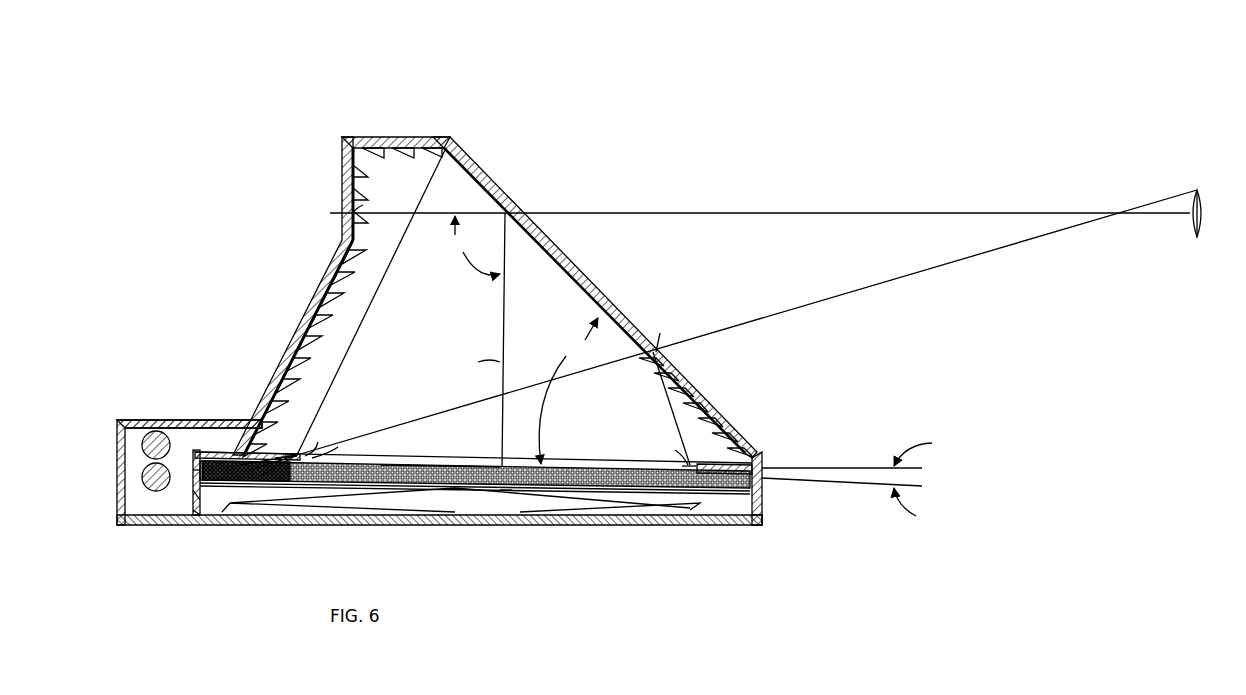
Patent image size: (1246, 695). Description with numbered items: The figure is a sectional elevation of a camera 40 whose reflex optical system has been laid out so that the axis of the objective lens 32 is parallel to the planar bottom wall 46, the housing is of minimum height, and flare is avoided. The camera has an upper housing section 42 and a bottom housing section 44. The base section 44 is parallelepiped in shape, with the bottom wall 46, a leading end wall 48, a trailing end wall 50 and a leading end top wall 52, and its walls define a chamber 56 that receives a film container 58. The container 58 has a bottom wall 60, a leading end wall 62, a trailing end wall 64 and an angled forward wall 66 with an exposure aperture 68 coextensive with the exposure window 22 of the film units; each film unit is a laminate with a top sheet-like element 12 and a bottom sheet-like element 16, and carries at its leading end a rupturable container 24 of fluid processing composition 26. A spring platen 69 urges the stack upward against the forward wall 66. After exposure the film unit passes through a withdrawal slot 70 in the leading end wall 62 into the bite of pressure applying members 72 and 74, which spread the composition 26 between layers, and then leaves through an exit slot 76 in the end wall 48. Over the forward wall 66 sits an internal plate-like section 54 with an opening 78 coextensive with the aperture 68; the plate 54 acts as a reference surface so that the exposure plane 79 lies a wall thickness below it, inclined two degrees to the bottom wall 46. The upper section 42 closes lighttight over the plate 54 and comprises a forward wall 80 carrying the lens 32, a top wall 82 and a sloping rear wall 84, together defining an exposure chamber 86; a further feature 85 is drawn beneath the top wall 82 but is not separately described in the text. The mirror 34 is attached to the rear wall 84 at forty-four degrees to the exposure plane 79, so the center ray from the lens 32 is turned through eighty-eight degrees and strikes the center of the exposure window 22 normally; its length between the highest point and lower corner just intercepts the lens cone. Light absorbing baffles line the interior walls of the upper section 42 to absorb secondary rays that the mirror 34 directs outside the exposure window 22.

The top sheet-like element 12 is at (368, 464).
The bottom sheet-like element 16 is at (440, 466).
The exposure window 22 is at (580, 470).
The rupturable container 24 is at (270, 481).
The fluid processing composition 26 is at (222, 481).
The objective lens 32 is at (330, 213).
The mirror 34 is at (580, 284).
The camera 40 is at (656, 295).
The upper housing section 42 is at (456, 135).
The bottom housing section 44 is at (764, 524).
The bottom wall 46 is at (452, 525).
The leading end wall 48 is at (122, 502).
The trailing end wall 50 is at (764, 480).
The leading end top wall 52 is at (227, 421).
The plate-like section 54 is at (222, 455).
The chamber 56 is at (187, 508).
The film container 58 is at (190, 495).
The bottom wall 60 is at (496, 502).
The leading end wall 62 is at (193, 475).
The trailing end wall 64 is at (722, 498).
The forward wall 66 is at (290, 458).
The exposure aperture 68 is at (690, 465).
The spring platen 69 is at (507, 492).
The withdrawal slot 70 is at (193, 456).
The pressure applying member 72 is at (144, 443).
The pressure applying member 74 is at (143, 479).
The exit slot 76 is at (120, 462).
The opening 78 is at (296, 452).
The exposure plane 79 is at (847, 481).
The forward wall 80 is at (342, 168).
The top wall 82 is at (405, 138).
The rear wall 84 is at (606, 290).
The top wall serrations 85 is at (397, 150).
The exposure chamber 86 is at (437, 351).